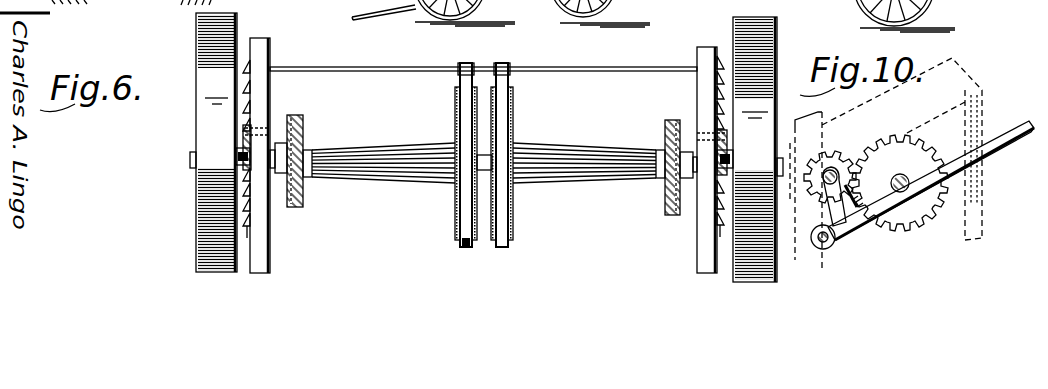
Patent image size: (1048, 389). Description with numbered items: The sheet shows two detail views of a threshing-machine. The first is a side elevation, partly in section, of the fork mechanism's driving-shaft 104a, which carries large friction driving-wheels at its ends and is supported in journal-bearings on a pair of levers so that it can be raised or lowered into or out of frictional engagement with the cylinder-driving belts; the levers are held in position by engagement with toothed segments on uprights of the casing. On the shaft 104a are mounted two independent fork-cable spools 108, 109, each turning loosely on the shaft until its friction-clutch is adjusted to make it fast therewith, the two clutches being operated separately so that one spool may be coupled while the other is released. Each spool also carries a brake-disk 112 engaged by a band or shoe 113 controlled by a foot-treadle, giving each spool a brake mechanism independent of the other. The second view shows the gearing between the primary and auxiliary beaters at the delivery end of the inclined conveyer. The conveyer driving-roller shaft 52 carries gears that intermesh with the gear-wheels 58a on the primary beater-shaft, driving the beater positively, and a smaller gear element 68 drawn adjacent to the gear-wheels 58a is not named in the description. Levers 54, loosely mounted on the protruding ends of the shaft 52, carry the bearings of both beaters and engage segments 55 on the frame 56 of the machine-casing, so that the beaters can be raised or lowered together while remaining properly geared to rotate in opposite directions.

In FIG. 6, the driving-shaft 104a is at (483, 160).
In FIG. 6, the spool 108 is at (389, 152).
In FIG. 6, the spool 109 is at (578, 180).
In FIG. 6, the brake-disk 112 is at (455, 213).
In FIG. 6, the band or shoe 113 is at (467, 241).
In FIG. 10, the shaft 52 is at (831, 243).
In FIG. 10, the levers 54 is at (998, 140).
In FIG. 10, the segments 55 is at (980, 193).
In FIG. 10, the frame 56 is at (976, 78).
In FIG. 10, the gear-wheels 58a is at (934, 148).
In FIG. 10, the pawl gear 68 is at (845, 157).